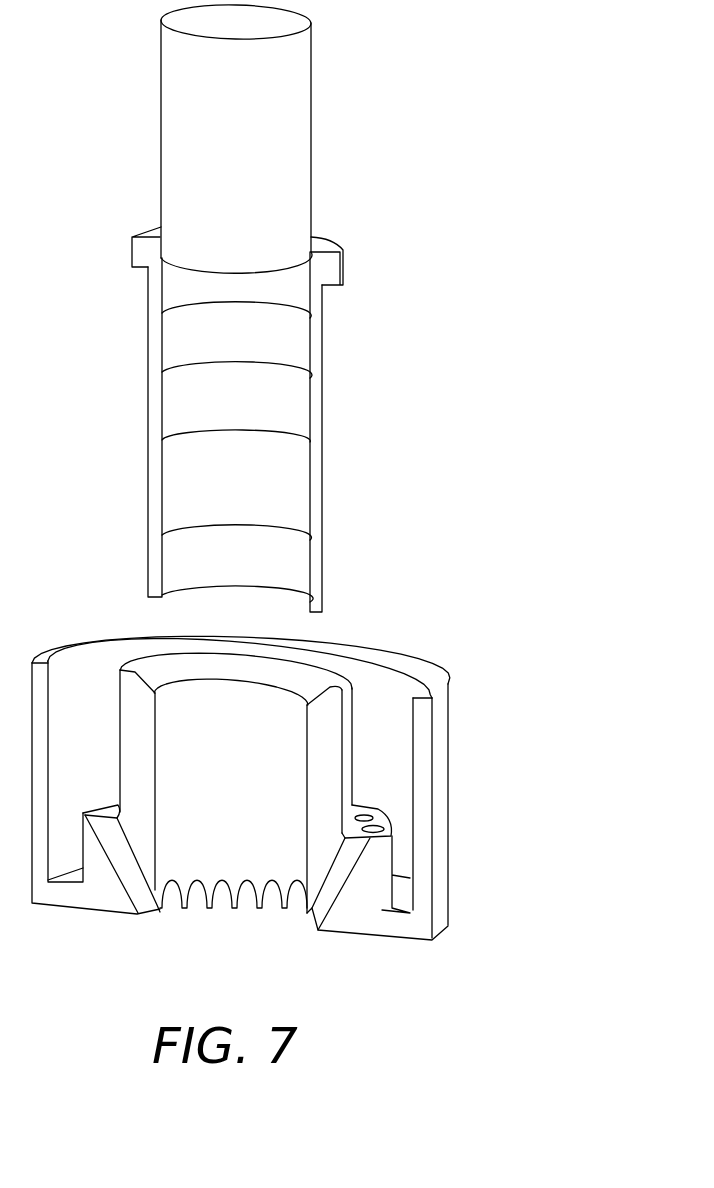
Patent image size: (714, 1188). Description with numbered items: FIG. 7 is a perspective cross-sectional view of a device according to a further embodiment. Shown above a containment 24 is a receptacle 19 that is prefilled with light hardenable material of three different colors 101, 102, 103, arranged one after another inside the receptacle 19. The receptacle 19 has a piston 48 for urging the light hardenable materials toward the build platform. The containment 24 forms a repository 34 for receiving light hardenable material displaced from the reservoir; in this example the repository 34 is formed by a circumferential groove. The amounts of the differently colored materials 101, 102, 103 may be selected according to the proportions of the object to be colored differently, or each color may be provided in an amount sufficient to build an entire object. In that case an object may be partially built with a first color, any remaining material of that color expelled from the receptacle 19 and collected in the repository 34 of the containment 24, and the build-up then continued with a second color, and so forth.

The piston 48 is at (298, 96).
The receptacle 19 is at (323, 335).
The light hardenable material of a first color 101 is at (288, 400).
The light hardenable material of a second color 102 is at (288, 493).
The light hardenable material of a third color 103 is at (288, 563).
The containment 24 is at (448, 818).
The repository 34 is at (380, 732).